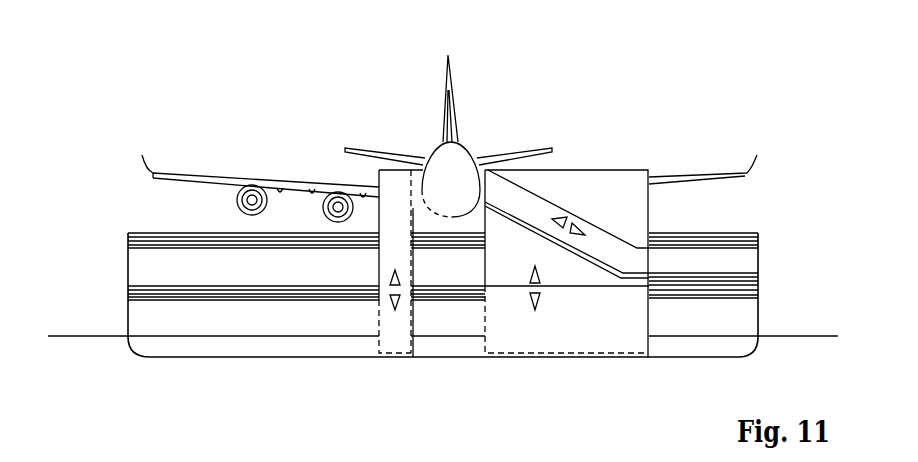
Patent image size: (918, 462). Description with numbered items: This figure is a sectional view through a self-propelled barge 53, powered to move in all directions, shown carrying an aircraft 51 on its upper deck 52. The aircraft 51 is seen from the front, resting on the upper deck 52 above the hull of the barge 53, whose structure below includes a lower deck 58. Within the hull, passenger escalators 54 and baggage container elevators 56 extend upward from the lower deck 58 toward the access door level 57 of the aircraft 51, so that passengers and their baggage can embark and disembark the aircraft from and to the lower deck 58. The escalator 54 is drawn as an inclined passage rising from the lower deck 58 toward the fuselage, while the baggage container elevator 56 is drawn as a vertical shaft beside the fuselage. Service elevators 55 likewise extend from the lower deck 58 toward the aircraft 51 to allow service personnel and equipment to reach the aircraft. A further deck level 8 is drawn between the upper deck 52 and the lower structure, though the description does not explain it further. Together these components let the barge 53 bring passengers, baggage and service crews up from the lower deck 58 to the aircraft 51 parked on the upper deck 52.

The aircraft 51 is at (448, 158).
The upper deck 52 is at (727, 237).
The barge 53 is at (140, 280).
The passenger escalator 54 is at (562, 198).
The service elevator 55 is at (398, 180).
The baggage container elevator 56 is at (398, 215).
The access door level 57 is at (485, 178).
The lower deck 58 is at (737, 272).
The deck 8 is at (322, 285).